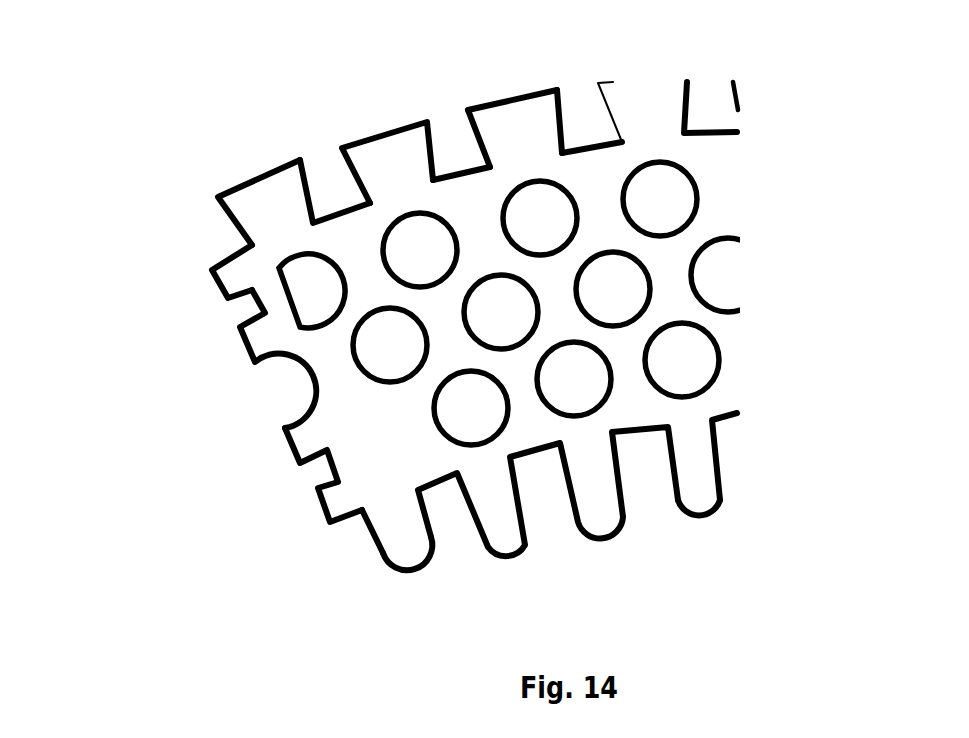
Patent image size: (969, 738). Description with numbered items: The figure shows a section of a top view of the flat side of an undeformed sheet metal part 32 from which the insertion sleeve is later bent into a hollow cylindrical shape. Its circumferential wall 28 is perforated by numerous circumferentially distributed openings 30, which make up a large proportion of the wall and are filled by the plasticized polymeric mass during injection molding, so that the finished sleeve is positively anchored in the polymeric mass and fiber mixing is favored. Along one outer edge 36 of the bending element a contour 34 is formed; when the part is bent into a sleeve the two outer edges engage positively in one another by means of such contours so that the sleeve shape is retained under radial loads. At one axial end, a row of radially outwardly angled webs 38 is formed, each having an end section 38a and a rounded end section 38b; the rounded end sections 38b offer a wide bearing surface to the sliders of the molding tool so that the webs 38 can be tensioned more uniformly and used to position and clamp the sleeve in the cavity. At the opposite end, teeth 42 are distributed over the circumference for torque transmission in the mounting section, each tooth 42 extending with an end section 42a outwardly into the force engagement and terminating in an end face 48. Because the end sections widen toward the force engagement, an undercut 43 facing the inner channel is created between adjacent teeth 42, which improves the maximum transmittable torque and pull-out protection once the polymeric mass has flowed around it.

The circumferential wall 28 is at (627, 368).
The opening 30 is at (652, 192).
The sheet metal part 32 is at (128, 118).
The contour 34 is at (305, 437).
The outer edge 36 is at (252, 306).
The web 38 is at (393, 508).
The end section of web 38a is at (384, 557).
The rounded end section 38b is at (412, 548).
The tooth 42 is at (522, 140).
The end section of tooth 42a is at (513, 107).
The undercut 43 is at (363, 197).
The end face 48 is at (383, 127).